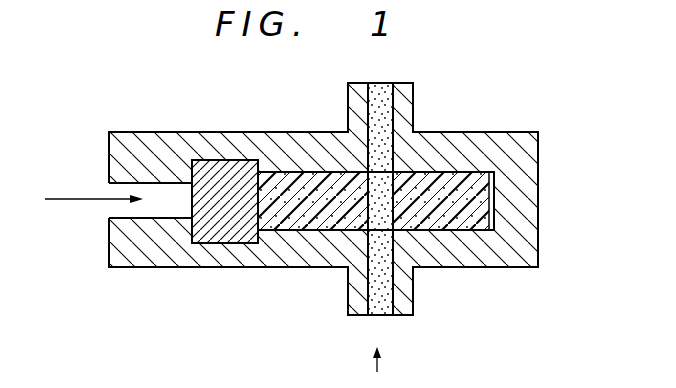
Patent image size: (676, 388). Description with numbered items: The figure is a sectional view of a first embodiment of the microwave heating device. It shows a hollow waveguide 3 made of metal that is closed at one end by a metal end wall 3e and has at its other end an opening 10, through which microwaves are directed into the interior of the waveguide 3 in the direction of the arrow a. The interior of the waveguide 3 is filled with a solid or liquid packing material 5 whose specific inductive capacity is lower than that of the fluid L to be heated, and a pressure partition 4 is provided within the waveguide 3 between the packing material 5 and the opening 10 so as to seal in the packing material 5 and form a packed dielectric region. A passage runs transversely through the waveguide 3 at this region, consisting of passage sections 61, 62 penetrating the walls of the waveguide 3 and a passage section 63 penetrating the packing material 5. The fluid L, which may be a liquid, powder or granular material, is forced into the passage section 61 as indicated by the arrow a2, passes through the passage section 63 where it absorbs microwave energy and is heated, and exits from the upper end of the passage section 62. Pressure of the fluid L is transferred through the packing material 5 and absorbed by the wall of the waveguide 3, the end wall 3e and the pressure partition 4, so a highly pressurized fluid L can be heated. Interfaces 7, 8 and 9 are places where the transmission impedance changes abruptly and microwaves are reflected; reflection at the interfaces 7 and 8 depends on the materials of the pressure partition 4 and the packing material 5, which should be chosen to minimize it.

The hollow waveguide 3 is at (283, 143).
The end wall 3e is at (525, 197).
The pressure partition 4 is at (215, 166).
The packing material 5 is at (323, 173).
The interface 7 is at (190, 206).
The interface 8 is at (260, 206).
The interface 9 is at (490, 233).
The opening 10 is at (148, 208).
The passage section 61 is at (388, 284).
The passage section 62 is at (392, 104).
The passage section 63 is at (385, 188).
The fluid L is at (350, 282).
The arrow a is at (94, 189).
The arrow a2 is at (392, 363).